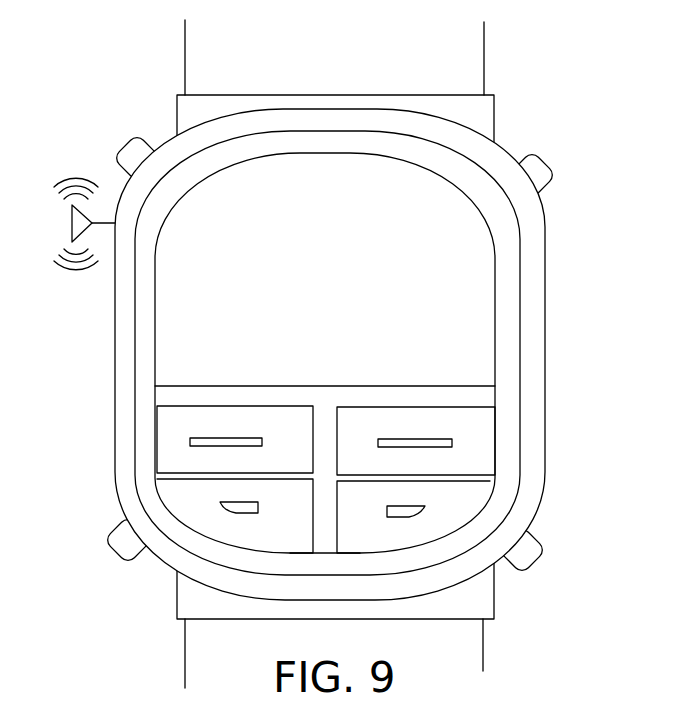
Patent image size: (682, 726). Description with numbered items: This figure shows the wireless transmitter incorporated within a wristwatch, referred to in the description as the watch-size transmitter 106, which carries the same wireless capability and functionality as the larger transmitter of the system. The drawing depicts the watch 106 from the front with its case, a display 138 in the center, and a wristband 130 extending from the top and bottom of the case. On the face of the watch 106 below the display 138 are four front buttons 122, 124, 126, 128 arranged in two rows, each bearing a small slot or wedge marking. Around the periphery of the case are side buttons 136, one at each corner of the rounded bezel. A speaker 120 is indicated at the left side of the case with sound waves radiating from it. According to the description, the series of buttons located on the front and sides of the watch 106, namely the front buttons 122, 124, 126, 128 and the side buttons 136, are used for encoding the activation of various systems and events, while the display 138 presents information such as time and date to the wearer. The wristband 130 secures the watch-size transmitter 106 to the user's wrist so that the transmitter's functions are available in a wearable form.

The watch-size transmitter 106 is at (605, 72).
The speaker 120 is at (72, 235).
The button 122 is at (165, 433).
The button 124 is at (165, 487).
The button 126 is at (492, 431).
The button 128 is at (469, 497).
The wristband 130 is at (473, 641).
The side buttons 136 is at (127, 141).
The display 138 is at (422, 292).